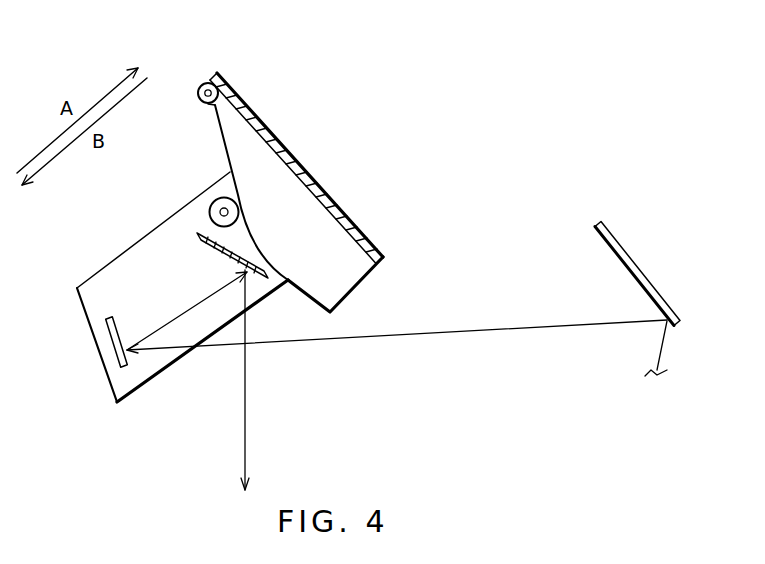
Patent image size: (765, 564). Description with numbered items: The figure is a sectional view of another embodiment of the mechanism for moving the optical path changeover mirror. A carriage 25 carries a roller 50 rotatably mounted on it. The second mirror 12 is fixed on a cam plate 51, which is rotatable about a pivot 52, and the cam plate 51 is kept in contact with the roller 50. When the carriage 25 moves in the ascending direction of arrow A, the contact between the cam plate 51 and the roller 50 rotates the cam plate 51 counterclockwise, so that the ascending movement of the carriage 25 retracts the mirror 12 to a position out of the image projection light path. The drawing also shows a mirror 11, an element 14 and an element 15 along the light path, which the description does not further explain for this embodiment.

The mirror 11 is at (642, 270).
The second mirror 12 is at (268, 130).
The light source 14 is at (104, 349).
The mirror 15 is at (193, 240).
The carriage 25 is at (155, 363).
The roller 50 is at (211, 205).
The cam plate 51 is at (357, 272).
The pivot 52 is at (209, 85).